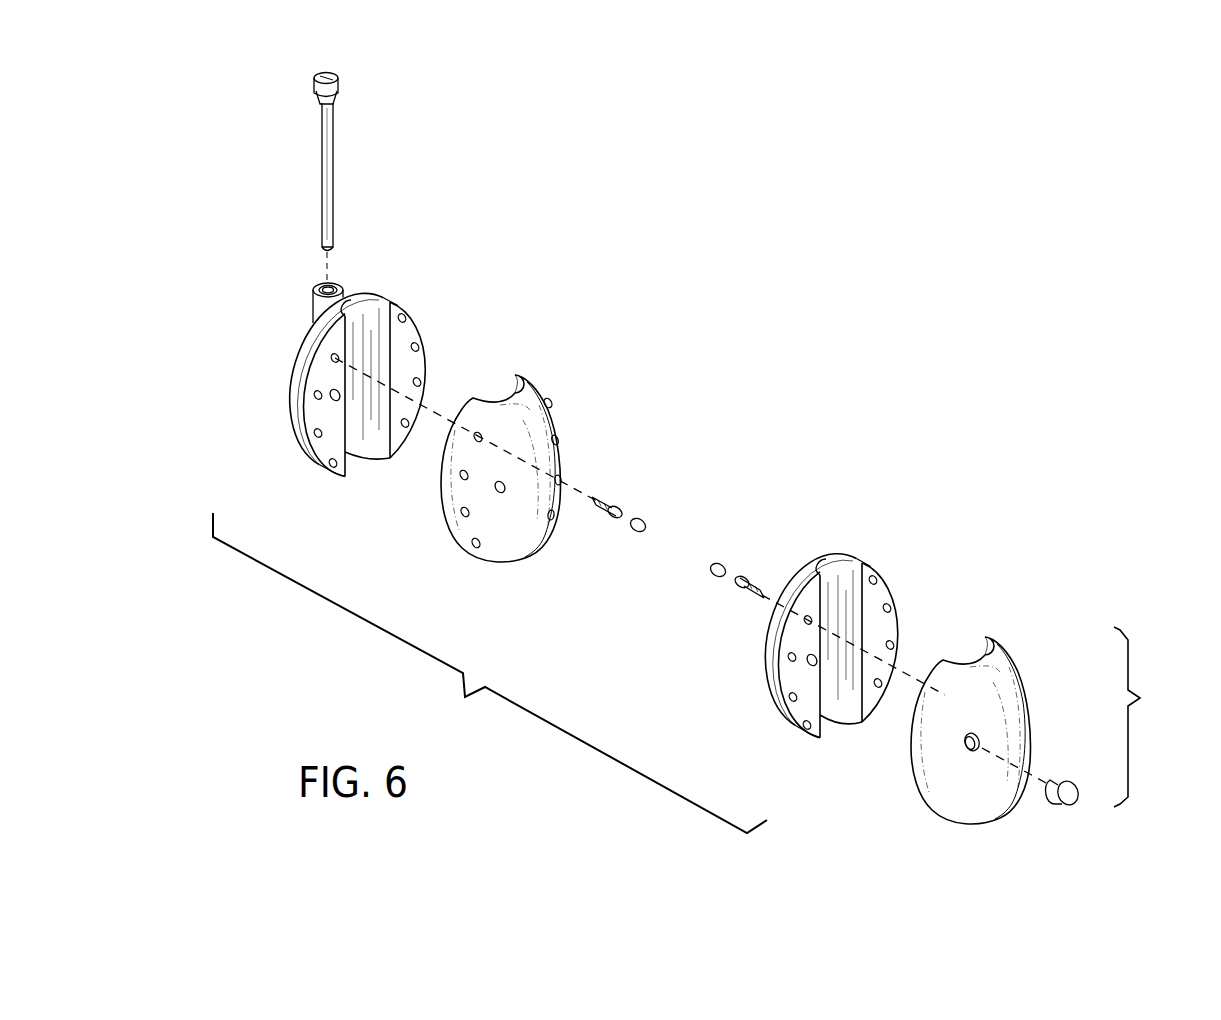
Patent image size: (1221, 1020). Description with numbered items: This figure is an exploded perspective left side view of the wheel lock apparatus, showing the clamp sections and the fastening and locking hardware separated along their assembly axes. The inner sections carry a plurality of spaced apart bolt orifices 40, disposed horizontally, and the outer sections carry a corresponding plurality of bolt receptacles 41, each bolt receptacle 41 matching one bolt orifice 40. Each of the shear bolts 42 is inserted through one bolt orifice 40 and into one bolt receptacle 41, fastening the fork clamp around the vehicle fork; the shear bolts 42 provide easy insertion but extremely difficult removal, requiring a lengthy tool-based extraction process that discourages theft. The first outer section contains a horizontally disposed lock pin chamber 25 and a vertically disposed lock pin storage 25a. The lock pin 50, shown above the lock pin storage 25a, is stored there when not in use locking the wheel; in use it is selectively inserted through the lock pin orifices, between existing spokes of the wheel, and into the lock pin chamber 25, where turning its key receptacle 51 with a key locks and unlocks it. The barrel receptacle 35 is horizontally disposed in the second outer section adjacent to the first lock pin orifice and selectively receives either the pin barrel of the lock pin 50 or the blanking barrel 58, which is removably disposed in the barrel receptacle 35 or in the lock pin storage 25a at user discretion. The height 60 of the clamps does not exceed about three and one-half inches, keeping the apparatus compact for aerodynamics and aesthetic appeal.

The lock pin chamber 25 is at (330, 392).
The lock pin storage 25a is at (315, 285).
The barrel receptacle 35 is at (986, 733).
The bolt orifices 40 is at (552, 400).
The bolt receptacles 41 is at (412, 347).
The shear bolts 42 is at (616, 482).
The lock pin 50 is at (337, 207).
The key receptacle 51 is at (314, 78).
The blanking barrel 58 is at (1050, 800).
The height 60 is at (1150, 717).